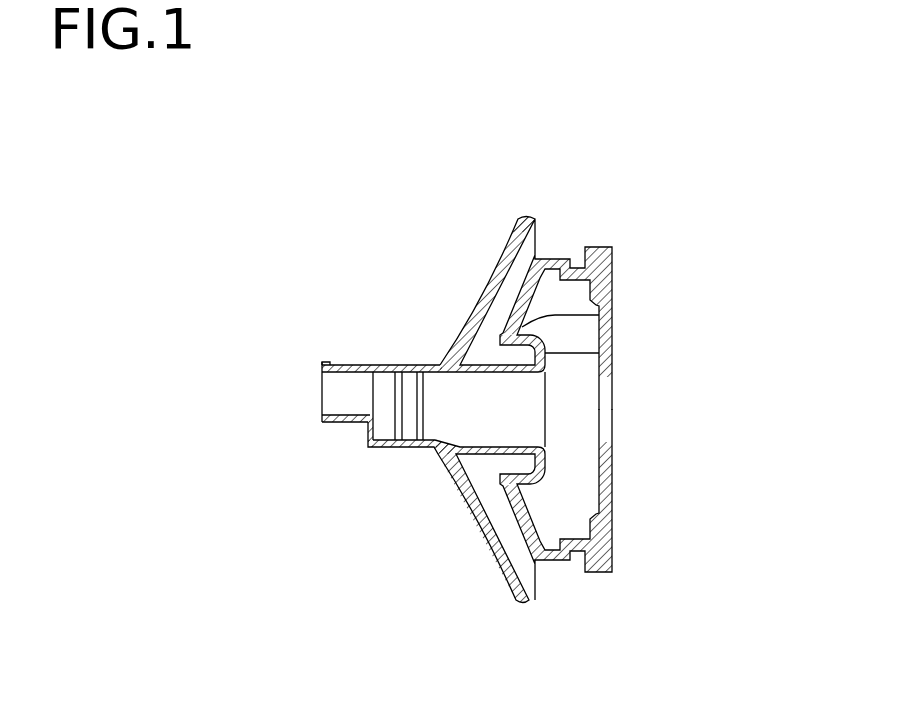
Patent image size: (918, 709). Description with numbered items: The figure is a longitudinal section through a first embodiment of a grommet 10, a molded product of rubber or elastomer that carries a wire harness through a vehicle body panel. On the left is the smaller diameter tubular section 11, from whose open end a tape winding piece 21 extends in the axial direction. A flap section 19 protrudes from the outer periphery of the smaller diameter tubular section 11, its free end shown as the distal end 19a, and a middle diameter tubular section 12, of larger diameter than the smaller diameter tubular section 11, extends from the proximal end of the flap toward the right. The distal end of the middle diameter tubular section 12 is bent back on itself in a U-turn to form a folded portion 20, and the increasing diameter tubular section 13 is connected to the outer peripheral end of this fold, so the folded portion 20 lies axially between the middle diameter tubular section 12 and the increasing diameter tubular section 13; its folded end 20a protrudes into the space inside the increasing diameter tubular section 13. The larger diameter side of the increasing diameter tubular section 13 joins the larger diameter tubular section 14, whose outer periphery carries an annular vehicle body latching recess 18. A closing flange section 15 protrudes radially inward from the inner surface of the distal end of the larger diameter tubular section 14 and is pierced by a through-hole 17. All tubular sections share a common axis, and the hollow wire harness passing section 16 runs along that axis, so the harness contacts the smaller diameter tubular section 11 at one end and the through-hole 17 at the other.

The grommet 10 is at (368, 213).
The smaller diameter tubular section 11 is at (403, 448).
The middle diameter tubular section 12 is at (478, 458).
The increasing diameter tubular section 13 is at (513, 529).
The larger diameter tubular section 14 is at (548, 560).
The closing flange section 15 is at (600, 488).
The wire harness passing section 16 is at (392, 387).
The through-hole 17 is at (600, 417).
The vehicle body latching recess 18 is at (579, 265).
The flap section 19 is at (495, 267).
The distal end of flap section 19a is at (528, 216).
The folded portion 20 is at (600, 314).
The folded end 20a is at (600, 354).
The tape winding piece 21 is at (345, 424).